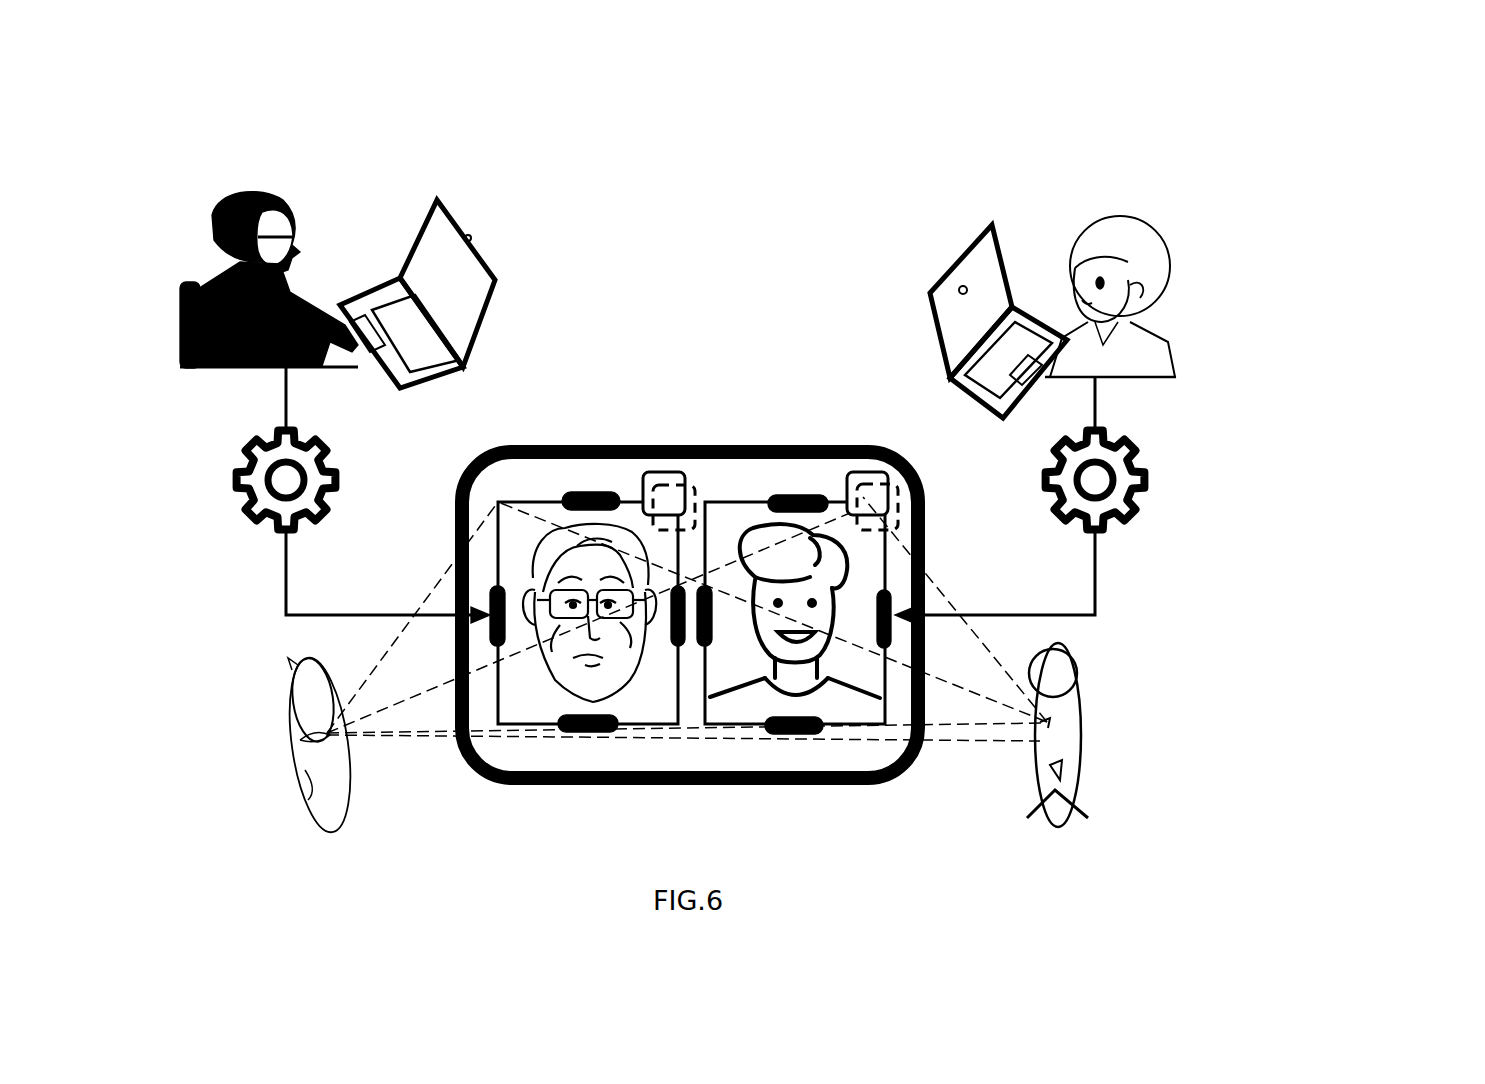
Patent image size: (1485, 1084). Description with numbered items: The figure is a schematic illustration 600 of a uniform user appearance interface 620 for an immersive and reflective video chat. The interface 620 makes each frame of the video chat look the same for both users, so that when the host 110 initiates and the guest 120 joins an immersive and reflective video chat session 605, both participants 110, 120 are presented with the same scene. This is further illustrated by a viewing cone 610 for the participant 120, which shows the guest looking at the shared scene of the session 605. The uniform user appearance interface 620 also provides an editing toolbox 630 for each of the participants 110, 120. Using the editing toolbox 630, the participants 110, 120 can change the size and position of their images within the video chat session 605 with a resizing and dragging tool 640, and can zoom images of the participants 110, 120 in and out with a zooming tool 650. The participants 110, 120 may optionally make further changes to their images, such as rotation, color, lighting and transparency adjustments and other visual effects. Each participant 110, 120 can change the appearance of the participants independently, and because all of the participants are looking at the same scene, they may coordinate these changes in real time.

The schematic illustration 600 is at (1447, 125).
The guest 120 is at (288, 208).
The host 110 is at (1080, 230).
The uniform user appearance interface 620 is at (232, 478).
The immersive and reflective video chat session 605 is at (741, 447).
The editing toolbox 630 is at (528, 498).
The resizing and dragging tool 640 is at (586, 490).
The zooming tool 650 is at (661, 474).
The viewing cone 610 is at (358, 722).